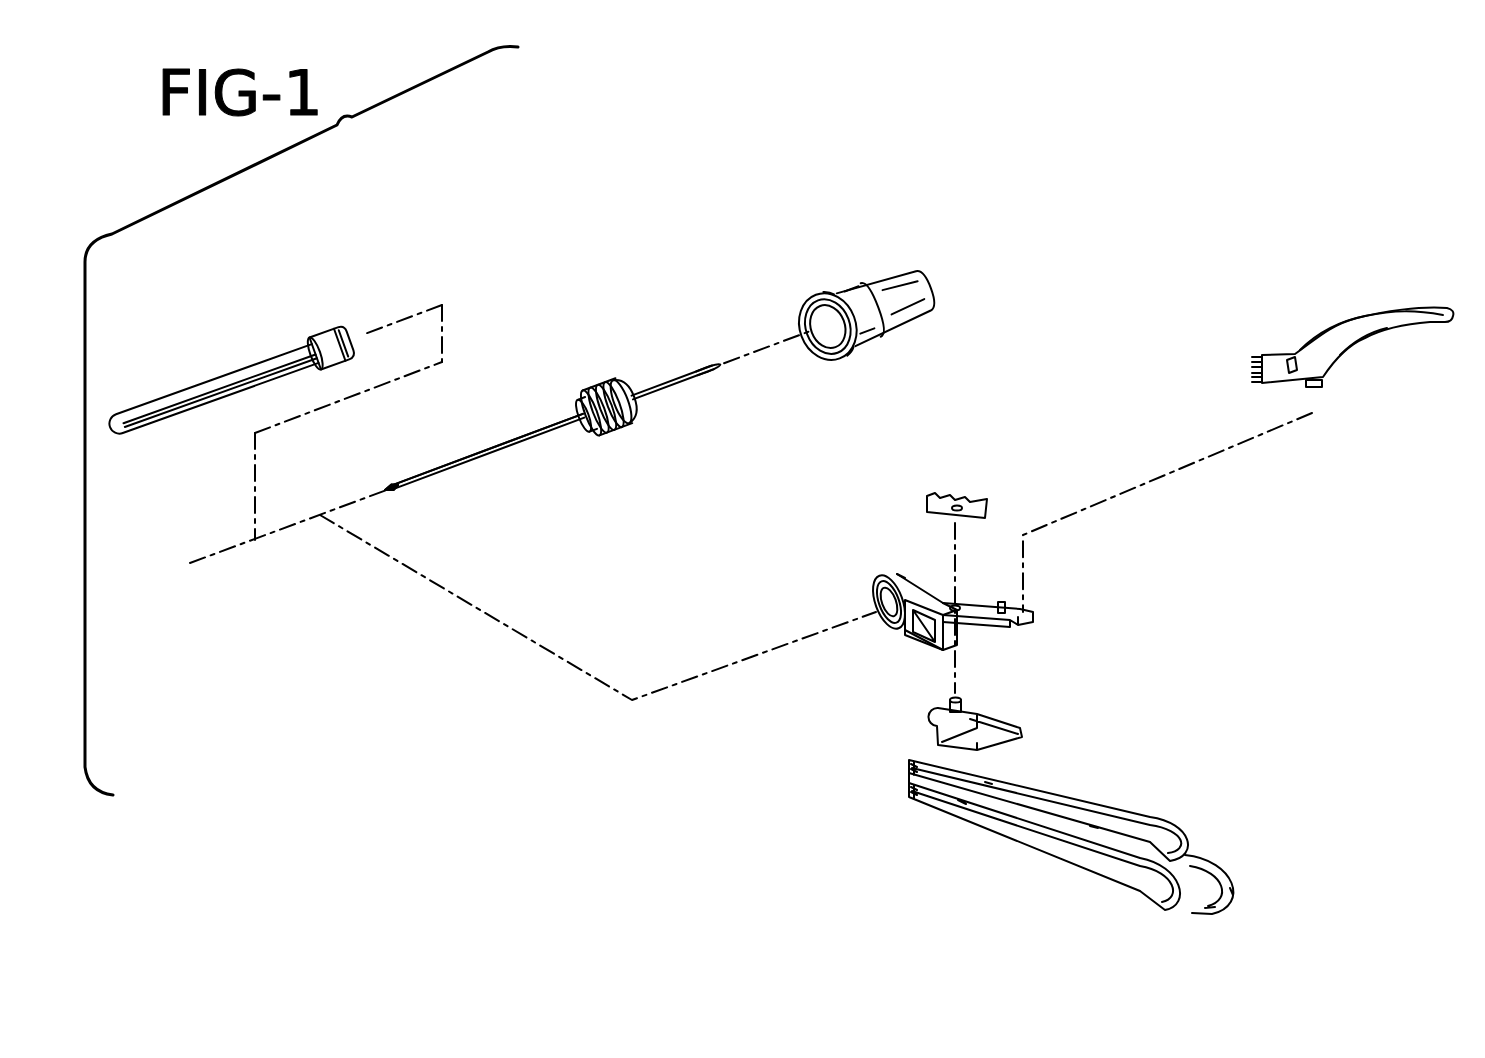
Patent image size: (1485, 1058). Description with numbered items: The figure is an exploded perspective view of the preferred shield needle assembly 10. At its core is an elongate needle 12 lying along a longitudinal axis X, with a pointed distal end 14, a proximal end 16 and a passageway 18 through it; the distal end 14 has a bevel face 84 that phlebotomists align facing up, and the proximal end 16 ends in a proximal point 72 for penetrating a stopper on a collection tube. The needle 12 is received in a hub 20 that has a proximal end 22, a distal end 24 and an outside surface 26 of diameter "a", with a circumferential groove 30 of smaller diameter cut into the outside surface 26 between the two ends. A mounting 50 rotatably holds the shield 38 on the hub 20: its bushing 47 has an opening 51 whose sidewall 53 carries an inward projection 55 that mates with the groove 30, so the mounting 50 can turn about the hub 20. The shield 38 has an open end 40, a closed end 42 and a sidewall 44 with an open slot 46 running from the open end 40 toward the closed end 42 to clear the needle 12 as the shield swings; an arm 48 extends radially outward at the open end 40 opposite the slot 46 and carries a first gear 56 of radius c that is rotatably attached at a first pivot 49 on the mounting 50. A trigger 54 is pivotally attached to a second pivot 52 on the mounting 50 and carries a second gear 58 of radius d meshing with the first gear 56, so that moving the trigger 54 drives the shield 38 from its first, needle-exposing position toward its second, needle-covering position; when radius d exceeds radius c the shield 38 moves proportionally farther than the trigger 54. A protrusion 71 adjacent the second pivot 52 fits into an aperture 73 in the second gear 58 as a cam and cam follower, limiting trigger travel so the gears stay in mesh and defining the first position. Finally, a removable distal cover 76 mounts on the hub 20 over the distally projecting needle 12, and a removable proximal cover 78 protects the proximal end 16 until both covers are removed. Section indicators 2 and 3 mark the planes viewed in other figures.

The shield needle assembly 10 is at (1260, 200).
The elongate needle 12 is at (523, 440).
The pointed distal end 14 is at (400, 488).
The proximal end 16 is at (677, 380).
The passageway 18 is at (387, 490).
The hub 20 is at (587, 448).
The proximal end 22 is at (617, 383).
The distal end 24 is at (570, 412).
The outside surface 26 is at (600, 390).
The circumferential groove 30 is at (630, 408).
The shield 38 is at (1065, 776).
The open end 40 is at (910, 745).
The closed end 42 is at (1230, 900).
The sidewall 44 is at (1177, 857).
The open slot 46 is at (1083, 857).
The bushing 47 is at (897, 573).
The arm 48 is at (1007, 723).
The first pivot 49 is at (973, 702).
The mounting 50 is at (964, 619).
The opening 51 is at (873, 593).
The second pivot 52 is at (1033, 613).
The sidewall 53 is at (877, 582).
The trigger 54 is at (1287, 361).
The inward projection 55 is at (870, 620).
The first gear 56 is at (960, 493).
The second gear 58 is at (1253, 363).
The protrusion 71 is at (1003, 603).
The proximal point 72 is at (713, 365).
The aperture 73 is at (1290, 360).
The removable distal cover 76 is at (196, 380).
The removable proximal cover 78 is at (888, 275).
The face 84 is at (373, 497).
The longitudinal axis X is at (757, 347).
The section line 2- 2 is at (353, 304).
The section line 3- 3 is at (190, 513).
The radius of first gear c is at (903, 403).
The radius of second gear d is at (1253, 255).